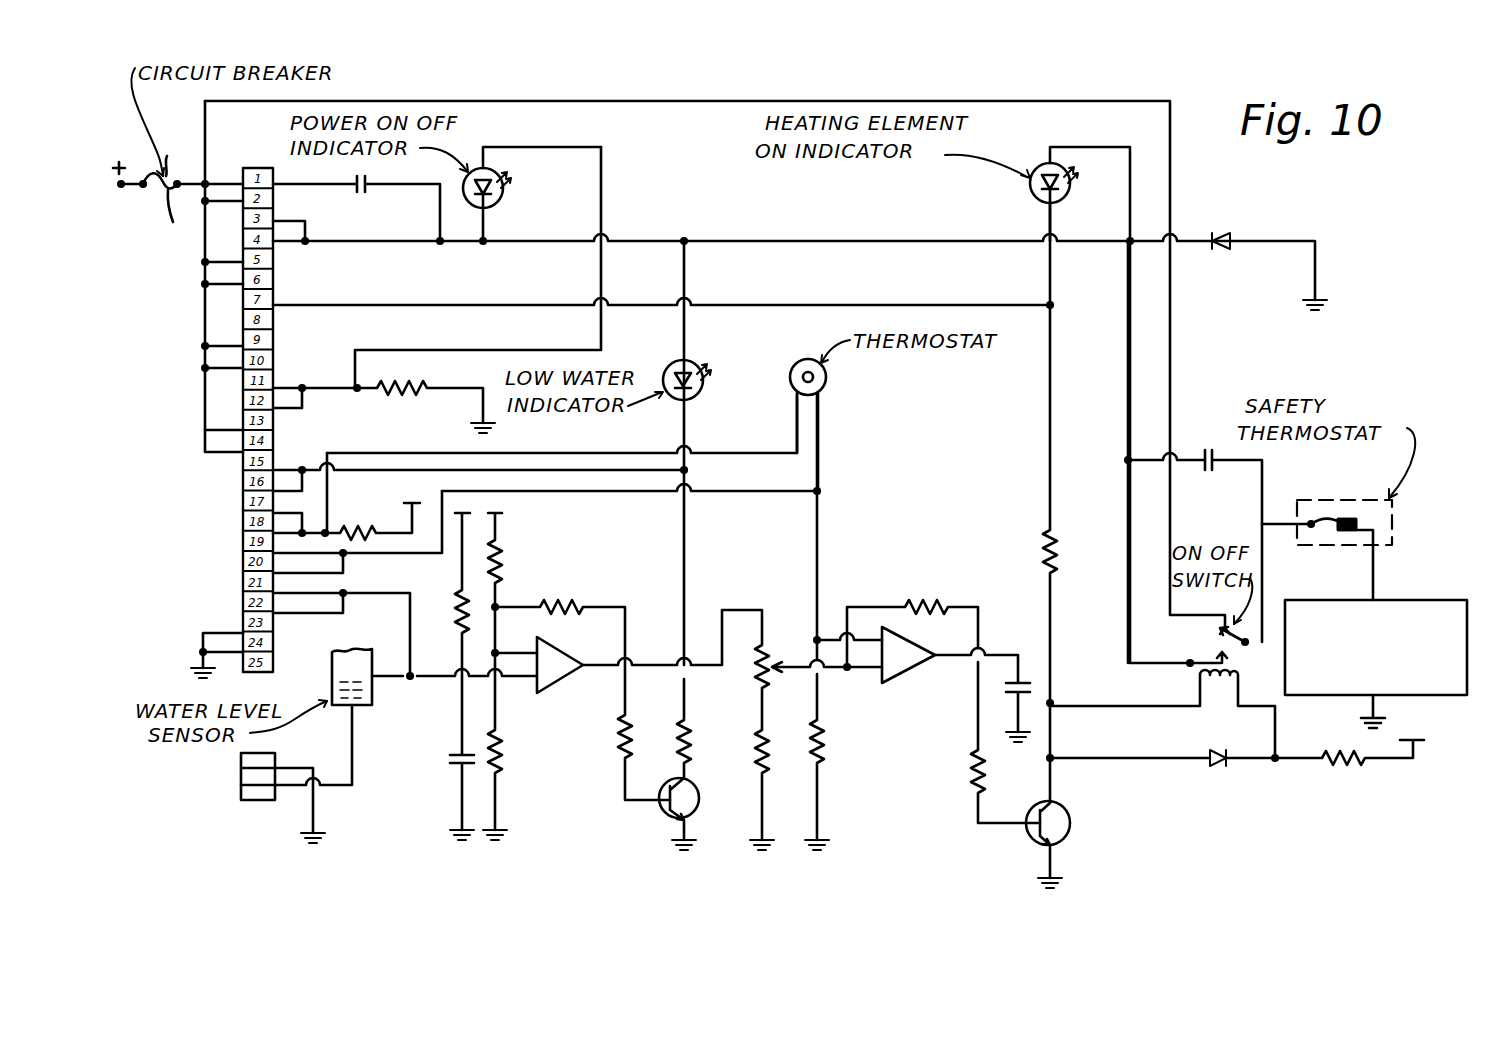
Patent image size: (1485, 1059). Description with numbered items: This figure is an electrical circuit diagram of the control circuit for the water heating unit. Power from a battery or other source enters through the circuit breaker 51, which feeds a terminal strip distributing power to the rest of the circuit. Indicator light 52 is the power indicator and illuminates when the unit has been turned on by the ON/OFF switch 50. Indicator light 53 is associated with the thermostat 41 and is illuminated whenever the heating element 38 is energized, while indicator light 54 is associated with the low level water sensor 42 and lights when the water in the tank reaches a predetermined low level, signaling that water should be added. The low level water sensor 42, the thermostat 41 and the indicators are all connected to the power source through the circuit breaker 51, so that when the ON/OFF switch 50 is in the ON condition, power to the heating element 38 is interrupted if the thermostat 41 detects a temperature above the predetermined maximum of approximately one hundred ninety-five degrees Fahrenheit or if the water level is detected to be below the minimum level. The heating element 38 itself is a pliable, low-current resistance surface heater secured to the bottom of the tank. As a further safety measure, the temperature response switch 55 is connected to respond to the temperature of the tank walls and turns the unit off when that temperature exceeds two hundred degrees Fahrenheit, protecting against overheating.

The circuit breaker 51 is at (165, 218).
The indicator light 52 is at (495, 200).
The indicator light 53 is at (1060, 200).
The indicator light 54 is at (696, 393).
The thermostat 41 is at (822, 391).
The low level water sensor 42 is at (393, 630).
The ON/OFF switch 50 is at (1218, 631).
The temperature response switch 55 is at (1346, 532).
The heating element 38 is at (1456, 600).